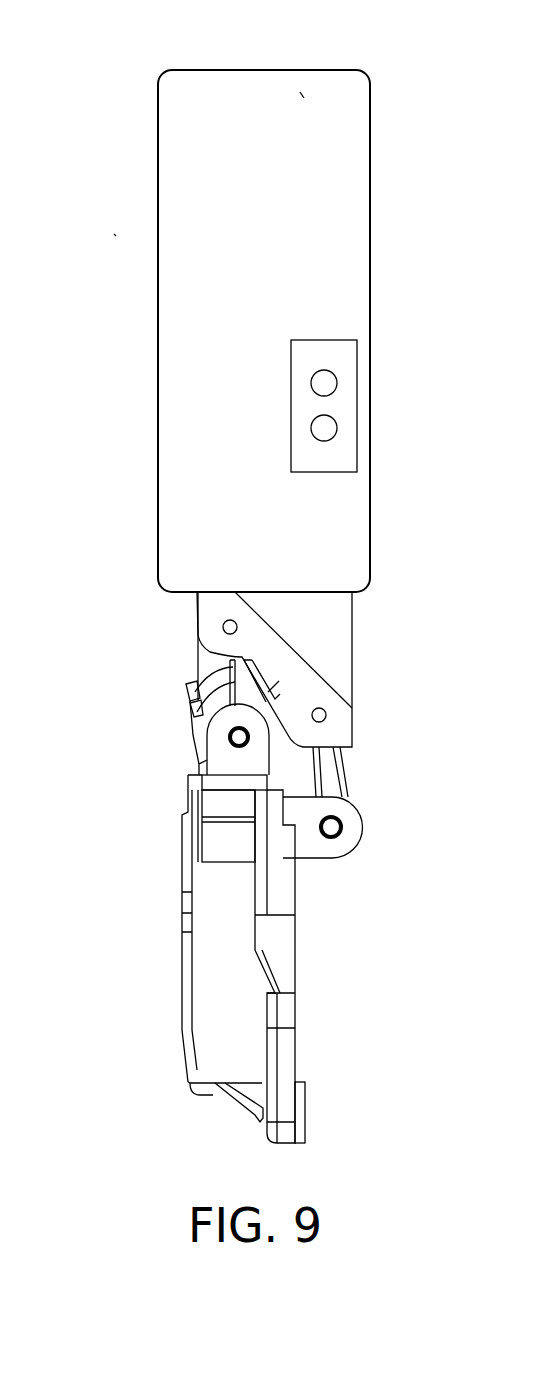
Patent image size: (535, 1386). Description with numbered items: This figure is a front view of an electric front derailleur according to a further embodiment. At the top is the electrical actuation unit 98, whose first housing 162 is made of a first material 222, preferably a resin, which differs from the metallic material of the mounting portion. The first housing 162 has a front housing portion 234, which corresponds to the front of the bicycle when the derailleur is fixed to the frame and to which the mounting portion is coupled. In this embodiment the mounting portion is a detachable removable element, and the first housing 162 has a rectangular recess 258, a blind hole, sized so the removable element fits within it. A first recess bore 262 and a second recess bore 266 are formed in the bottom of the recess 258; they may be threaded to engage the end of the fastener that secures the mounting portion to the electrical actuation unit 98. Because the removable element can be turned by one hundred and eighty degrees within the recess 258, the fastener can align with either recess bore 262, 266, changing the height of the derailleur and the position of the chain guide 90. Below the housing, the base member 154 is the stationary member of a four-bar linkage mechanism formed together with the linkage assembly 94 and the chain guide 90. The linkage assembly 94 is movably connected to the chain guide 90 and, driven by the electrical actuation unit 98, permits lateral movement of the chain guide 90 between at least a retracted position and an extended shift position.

The first housing 162 is at (232, 70).
The front housing portion 234 is at (301, 100).
The electrical actuation unit 98 is at (108, 229).
The first material 222 is at (119, 336).
The recess 258 is at (340, 356).
The second recess bore 266 is at (313, 380).
The first recess bore 262 is at (312, 430).
The base member 154 is at (313, 640).
The linkage assembly 94 is at (128, 775).
The chain guide 90 is at (298, 953).